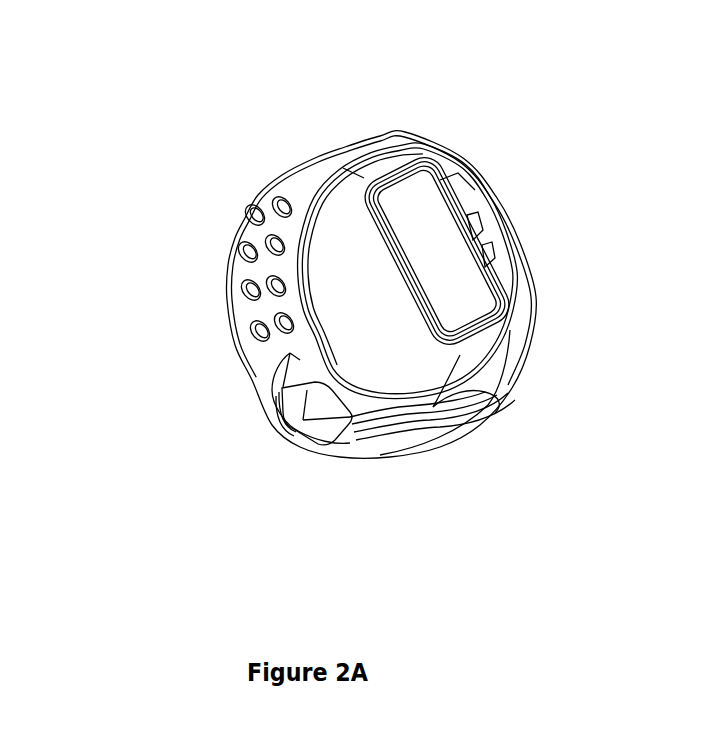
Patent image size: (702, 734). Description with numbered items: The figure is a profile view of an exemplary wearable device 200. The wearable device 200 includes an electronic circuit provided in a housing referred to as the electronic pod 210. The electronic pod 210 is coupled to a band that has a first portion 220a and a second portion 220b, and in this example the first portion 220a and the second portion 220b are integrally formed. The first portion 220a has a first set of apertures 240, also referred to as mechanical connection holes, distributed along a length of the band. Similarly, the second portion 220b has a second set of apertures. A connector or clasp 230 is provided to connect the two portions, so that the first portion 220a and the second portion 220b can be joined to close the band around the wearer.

The wearable device 200 is at (143, 548).
The electronic pod 210 is at (400, 197).
The first portion 220a is at (227, 302).
The second portion 220b is at (385, 445).
The clasp 230 is at (318, 430).
The first set of apertures 240 is at (247, 207).